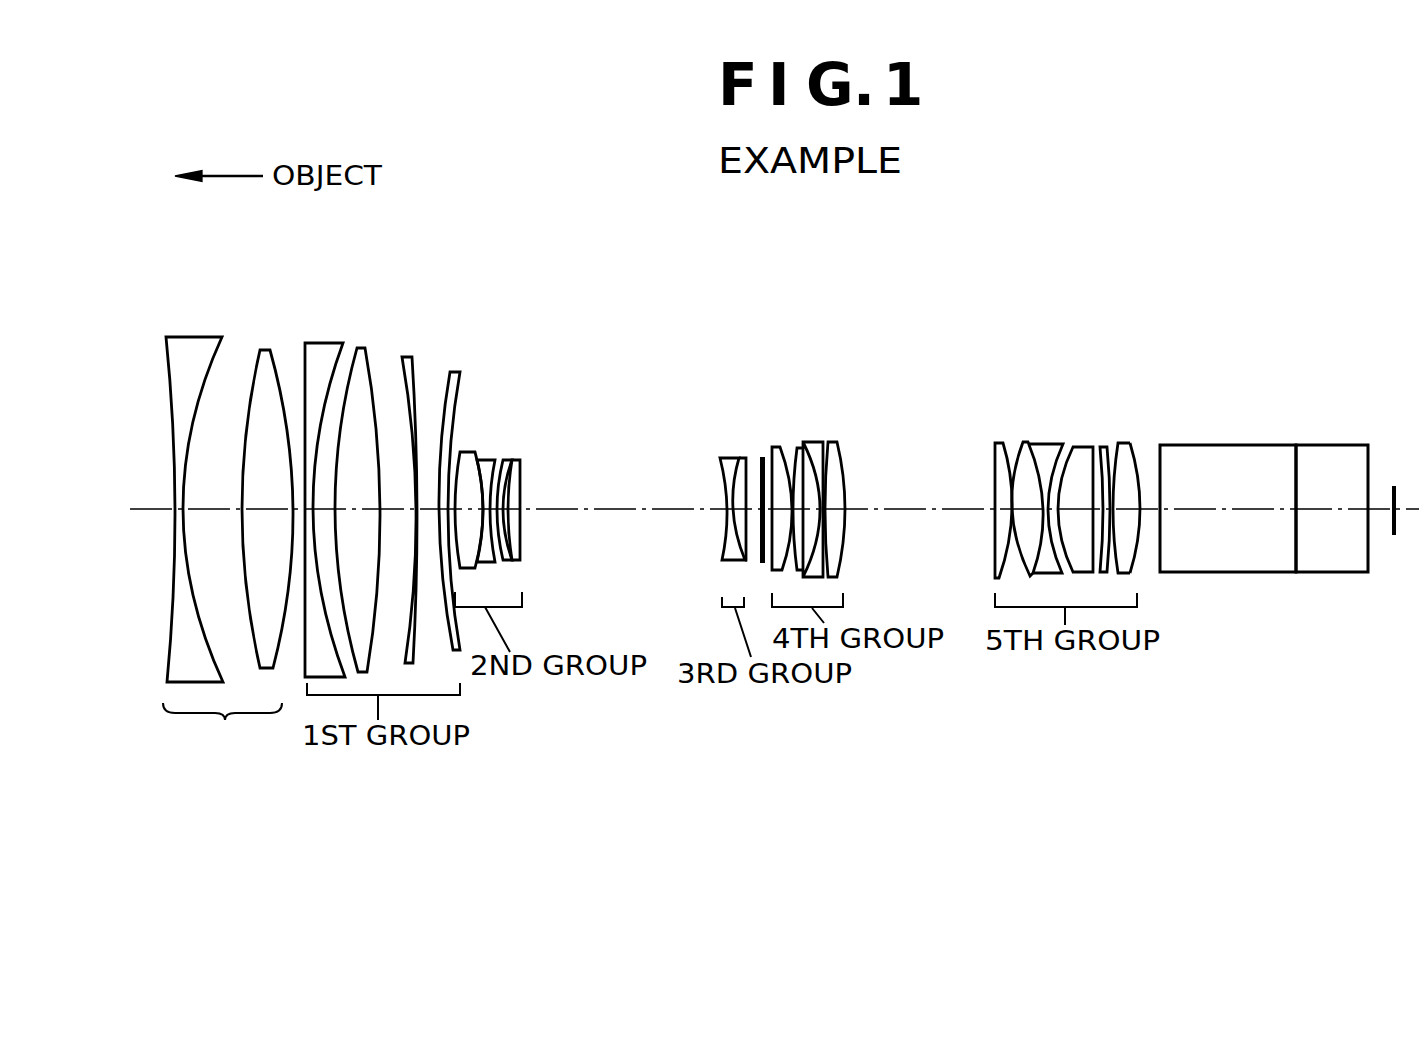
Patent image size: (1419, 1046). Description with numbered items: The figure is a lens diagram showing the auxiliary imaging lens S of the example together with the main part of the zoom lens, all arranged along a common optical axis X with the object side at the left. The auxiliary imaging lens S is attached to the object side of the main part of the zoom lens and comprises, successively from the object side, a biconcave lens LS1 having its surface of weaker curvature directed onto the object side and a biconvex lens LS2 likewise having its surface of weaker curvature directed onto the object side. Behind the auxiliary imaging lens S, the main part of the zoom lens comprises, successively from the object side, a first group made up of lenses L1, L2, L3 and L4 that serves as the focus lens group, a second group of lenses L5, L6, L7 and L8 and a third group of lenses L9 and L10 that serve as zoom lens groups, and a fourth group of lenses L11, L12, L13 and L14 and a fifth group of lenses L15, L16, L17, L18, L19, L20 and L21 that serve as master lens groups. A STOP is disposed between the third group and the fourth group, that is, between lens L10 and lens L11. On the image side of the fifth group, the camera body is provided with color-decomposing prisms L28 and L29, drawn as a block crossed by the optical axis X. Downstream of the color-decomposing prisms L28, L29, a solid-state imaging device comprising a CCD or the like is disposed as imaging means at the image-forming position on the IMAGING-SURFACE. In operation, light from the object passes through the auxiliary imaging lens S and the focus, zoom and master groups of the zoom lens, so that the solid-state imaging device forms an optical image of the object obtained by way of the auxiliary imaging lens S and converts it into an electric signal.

The optical axis X is at (165, 509).
The auxiliary imaging lens S is at (222, 726).
The biconcave lens LS1 is at (196, 347).
The biconvex lens LS2 is at (268, 357).
The first group lens L1 is at (321, 352).
The first group lens L2 is at (364, 357).
The first group lens L3 is at (409, 364).
The first group lens L4 is at (449, 378).
The second group lens L5 is at (468, 455).
The second group lens L6 is at (502, 461).
The second group lens L7 is at (516, 460).
The second group lens L8 is at (521, 474).
The third group lens L9 is at (728, 457).
The third group lens L10 is at (747, 457).
The stop STOP is at (760, 558).
The fourth group lens L11 is at (773, 447).
The fourth group lens L12 is at (792, 447).
The fourth group lens L13 is at (812, 445).
The fourth group lens L14 is at (838, 447).
The fifth group lens L15 is at (995, 447).
The fifth group lens L16 is at (1023, 445).
The fifth group lens L17 is at (1047, 447).
The fifth group lens L18 is at (1078, 445).
The fifth group lens L19 is at (1100, 447).
The fifth group lens L20 is at (1120, 445).
The fifth group lens L21 is at (1127, 452).
The color-decomposing prism L28 is at (1267, 456).
The color-decomposing prism L29 is at (1346, 460).
The imaging surface IMAGING-SURFACE is at (1392, 530).